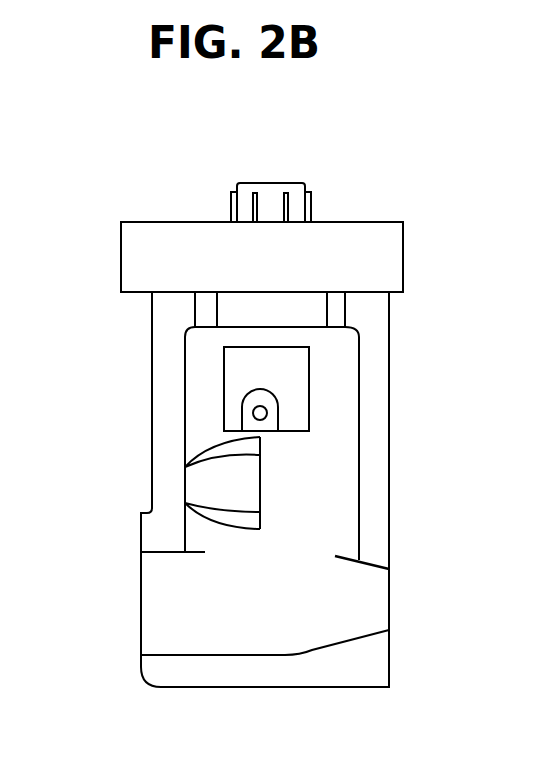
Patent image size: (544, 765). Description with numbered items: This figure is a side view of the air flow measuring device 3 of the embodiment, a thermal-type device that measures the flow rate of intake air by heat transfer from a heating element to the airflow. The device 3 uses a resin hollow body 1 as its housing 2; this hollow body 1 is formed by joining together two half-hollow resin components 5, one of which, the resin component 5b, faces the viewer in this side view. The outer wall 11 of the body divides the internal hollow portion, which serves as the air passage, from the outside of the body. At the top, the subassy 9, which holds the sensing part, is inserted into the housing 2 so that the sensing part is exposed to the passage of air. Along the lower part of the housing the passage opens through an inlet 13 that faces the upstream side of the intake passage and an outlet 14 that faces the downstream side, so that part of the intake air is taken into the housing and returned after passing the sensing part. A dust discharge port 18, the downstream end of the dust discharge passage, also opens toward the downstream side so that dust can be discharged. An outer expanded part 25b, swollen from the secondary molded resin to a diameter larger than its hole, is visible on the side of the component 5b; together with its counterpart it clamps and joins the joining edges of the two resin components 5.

The air flow measuring device 3 is at (448, 183).
The subassy 9 is at (270, 190).
The hollow body 1 is at (289, 489).
The housing 2 is at (397, 352).
The outer wall 11 is at (373, 403).
The resin component 5b is at (289, 443).
The resin components 5 is at (338, 450).
The outer expanded part 25b is at (255, 413).
The outlet 14 is at (260, 495).
The inlet 13 is at (140, 597).
The dust discharge port 18 is at (389, 604).